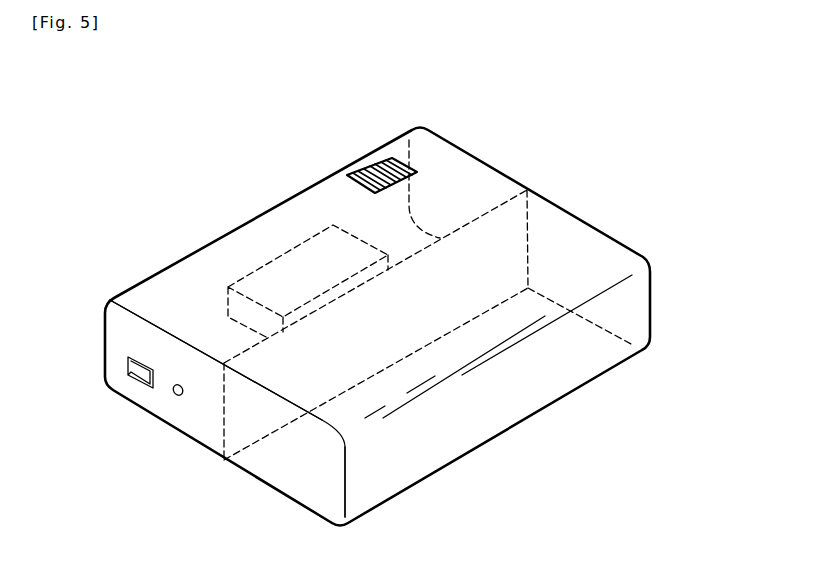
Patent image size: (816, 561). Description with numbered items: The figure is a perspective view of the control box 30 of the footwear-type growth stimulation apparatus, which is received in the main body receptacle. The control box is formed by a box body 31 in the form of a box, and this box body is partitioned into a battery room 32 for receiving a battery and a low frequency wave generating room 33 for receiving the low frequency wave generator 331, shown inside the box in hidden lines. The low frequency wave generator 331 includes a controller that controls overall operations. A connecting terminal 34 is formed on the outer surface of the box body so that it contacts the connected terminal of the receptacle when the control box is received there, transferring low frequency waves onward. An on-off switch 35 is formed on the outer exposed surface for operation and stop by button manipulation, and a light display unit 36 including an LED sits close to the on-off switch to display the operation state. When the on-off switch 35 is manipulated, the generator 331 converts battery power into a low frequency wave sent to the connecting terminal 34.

The control box 30 is at (592, 129).
The box body 31 is at (449, 438).
The battery room 32 is at (503, 318).
The low frequency wave generating room 33 is at (188, 306).
The low frequency wave generator 331 is at (312, 268).
The connecting terminal 34 is at (378, 166).
The on-off switch 35 is at (137, 377).
The light display unit 36 is at (176, 393).